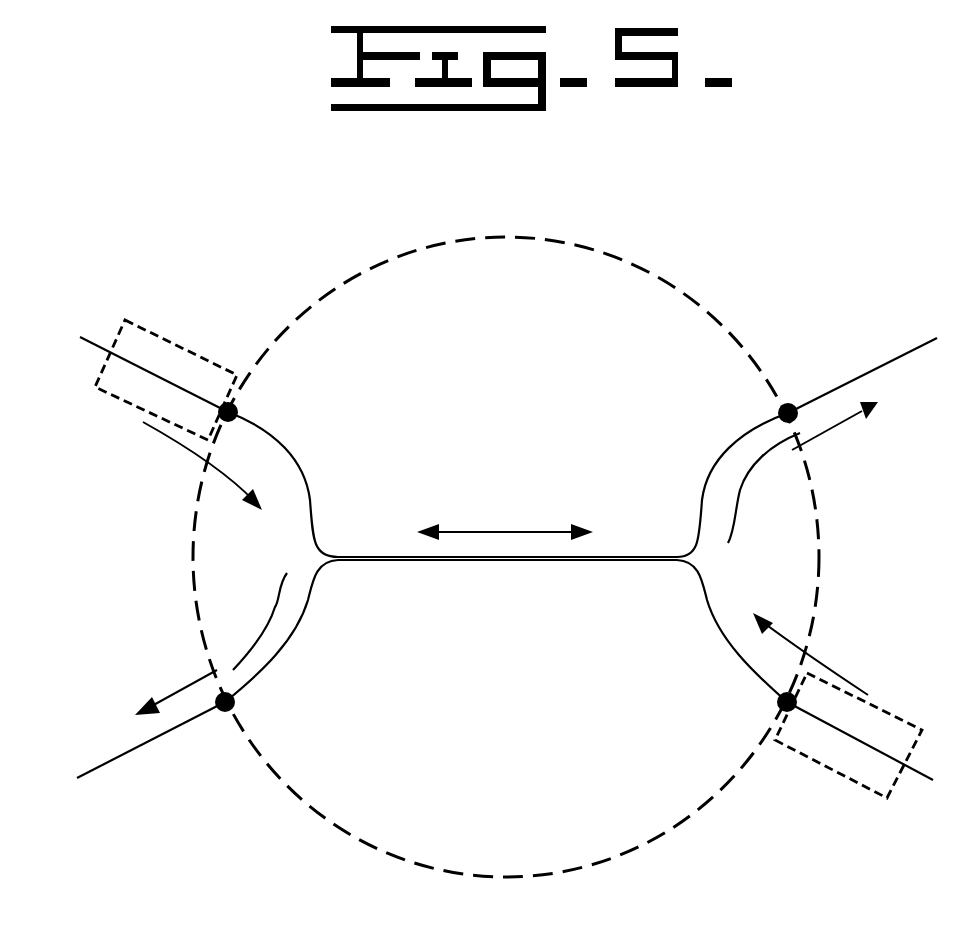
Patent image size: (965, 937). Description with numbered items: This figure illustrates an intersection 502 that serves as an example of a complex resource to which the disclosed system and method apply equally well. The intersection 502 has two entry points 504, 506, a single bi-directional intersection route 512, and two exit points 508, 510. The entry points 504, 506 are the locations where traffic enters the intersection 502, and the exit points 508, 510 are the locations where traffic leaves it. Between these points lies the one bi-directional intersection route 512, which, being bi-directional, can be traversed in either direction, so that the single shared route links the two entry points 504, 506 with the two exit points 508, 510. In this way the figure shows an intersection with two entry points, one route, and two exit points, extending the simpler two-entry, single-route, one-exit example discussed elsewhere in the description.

The intersection 502 is at (643, 273).
The entry point 504 is at (236, 410).
The entry point 506 is at (780, 707).
The exit point 508 is at (236, 703).
The exit point 510 is at (778, 408).
The bi-directional intersection route 512 is at (538, 560).